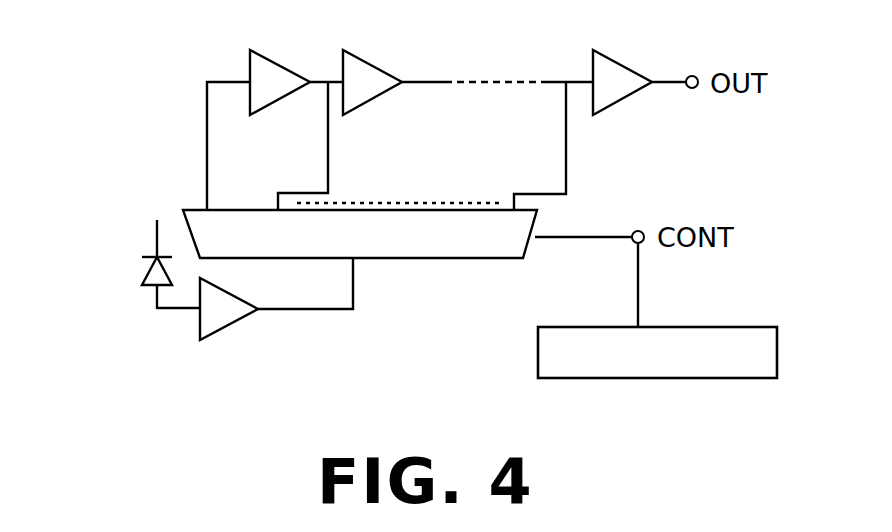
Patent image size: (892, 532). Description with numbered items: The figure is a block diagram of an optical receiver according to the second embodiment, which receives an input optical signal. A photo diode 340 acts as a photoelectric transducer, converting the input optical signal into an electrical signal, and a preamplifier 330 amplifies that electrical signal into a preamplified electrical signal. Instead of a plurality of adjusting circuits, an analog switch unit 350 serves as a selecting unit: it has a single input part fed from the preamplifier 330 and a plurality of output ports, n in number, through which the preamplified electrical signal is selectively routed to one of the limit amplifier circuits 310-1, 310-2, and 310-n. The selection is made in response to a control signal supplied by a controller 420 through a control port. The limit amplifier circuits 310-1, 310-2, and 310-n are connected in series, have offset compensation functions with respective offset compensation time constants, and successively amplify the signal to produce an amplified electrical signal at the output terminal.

The limit amplifier circuit 310-1 is at (278, 103).
The limit amplifier circuit 310-2 is at (372, 103).
The limit amplifier circuit 310-n is at (622, 103).
The preamplifier 330 is at (225, 328).
The photo diode 340 is at (142, 287).
The analog switch unit 350 is at (492, 258).
The controller 420 is at (670, 378).